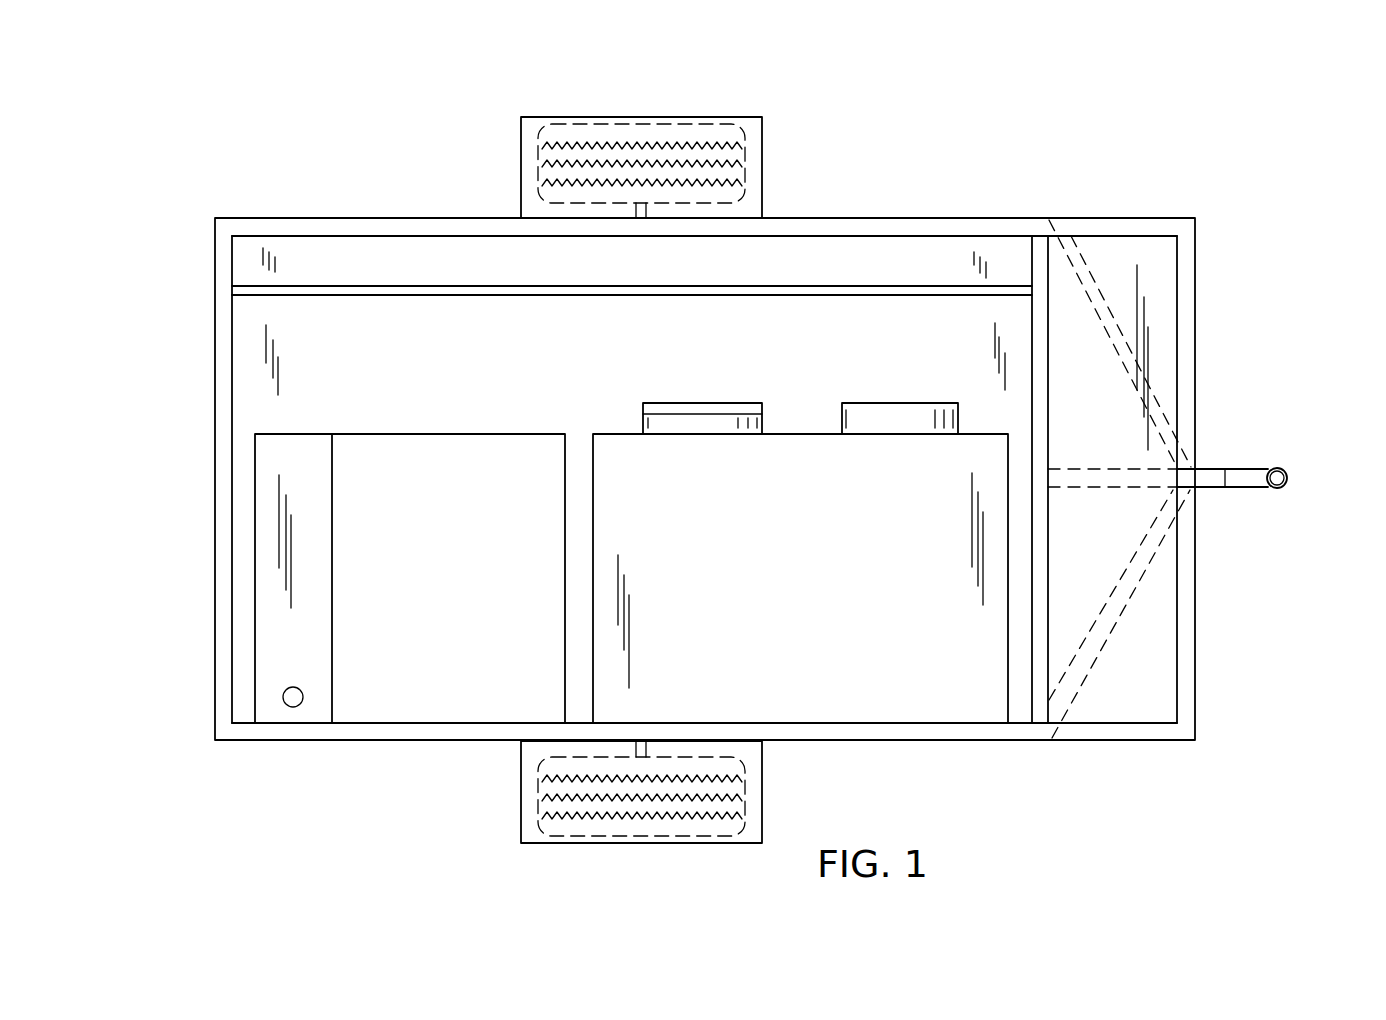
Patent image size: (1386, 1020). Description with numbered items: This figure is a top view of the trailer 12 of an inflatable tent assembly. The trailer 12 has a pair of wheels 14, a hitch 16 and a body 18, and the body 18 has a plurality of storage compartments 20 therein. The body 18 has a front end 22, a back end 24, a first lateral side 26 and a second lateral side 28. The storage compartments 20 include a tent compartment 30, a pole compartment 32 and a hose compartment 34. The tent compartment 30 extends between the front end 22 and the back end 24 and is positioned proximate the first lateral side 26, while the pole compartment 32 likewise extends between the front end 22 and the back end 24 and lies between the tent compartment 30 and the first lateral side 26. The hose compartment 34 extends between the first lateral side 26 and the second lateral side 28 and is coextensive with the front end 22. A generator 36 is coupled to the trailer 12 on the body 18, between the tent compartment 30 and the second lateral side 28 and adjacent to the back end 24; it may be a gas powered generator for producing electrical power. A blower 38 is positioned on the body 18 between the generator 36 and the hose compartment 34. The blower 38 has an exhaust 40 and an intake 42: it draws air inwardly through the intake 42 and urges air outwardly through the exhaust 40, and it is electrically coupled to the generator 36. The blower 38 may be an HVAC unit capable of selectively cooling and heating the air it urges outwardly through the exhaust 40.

The trailer 12 is at (956, 205).
The wheels 14 is at (661, 124).
The hitch 16 is at (1291, 476).
The body 18 is at (408, 218).
The storage compartments 20 is at (255, 333).
The front end 22 is at (1196, 612).
The back end 24 is at (215, 495).
The first lateral side 26 is at (893, 218).
The second lateral side 28 is at (923, 742).
The tent compartment 30 is at (982, 337).
The pole compartment 32 is at (822, 267).
The hose compartment 34 is at (1113, 427).
The generator 36 is at (400, 708).
The blower 38 is at (977, 692).
The exhaust 40 is at (957, 403).
The intake 42 is at (723, 403).